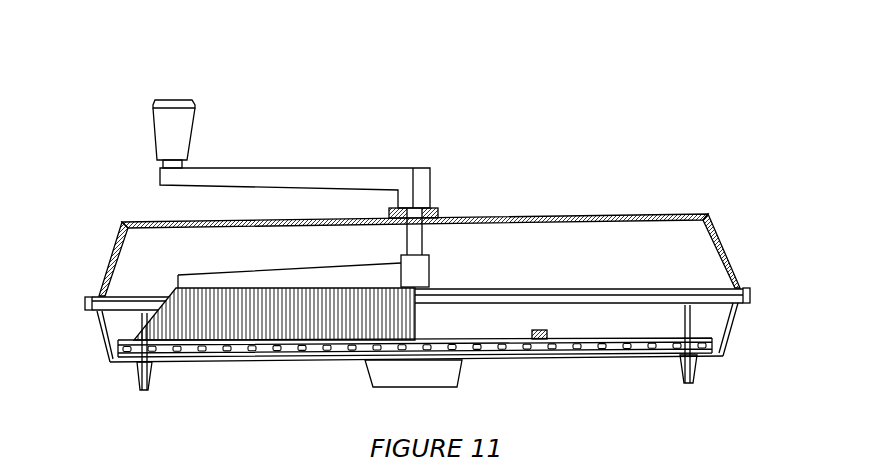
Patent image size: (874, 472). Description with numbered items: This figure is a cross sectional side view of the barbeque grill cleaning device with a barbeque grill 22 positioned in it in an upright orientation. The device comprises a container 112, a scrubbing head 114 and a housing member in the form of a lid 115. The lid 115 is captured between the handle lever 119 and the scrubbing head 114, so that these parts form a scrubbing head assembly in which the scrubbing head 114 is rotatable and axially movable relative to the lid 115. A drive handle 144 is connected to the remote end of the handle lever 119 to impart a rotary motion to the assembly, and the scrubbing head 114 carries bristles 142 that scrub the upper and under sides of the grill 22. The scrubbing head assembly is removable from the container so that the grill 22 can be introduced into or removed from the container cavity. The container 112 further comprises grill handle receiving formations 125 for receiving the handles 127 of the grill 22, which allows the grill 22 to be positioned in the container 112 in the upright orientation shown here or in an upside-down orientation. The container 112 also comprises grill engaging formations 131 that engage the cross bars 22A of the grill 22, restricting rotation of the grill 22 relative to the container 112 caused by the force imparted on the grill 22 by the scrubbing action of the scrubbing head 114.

The drive handle 144 is at (172, 99).
The handle lever 119 is at (262, 178).
The lid 115 is at (718, 238).
The container 112 is at (737, 312).
The scrubbing head 114 is at (178, 282).
The bristles 142 is at (145, 333).
The barbeque grill 22 is at (243, 357).
The cross bars 22A is at (577, 347).
The grill engaging formations 131 is at (545, 330).
The grill handle receiving formations 125 is at (145, 390).
The handles 127 is at (692, 317).